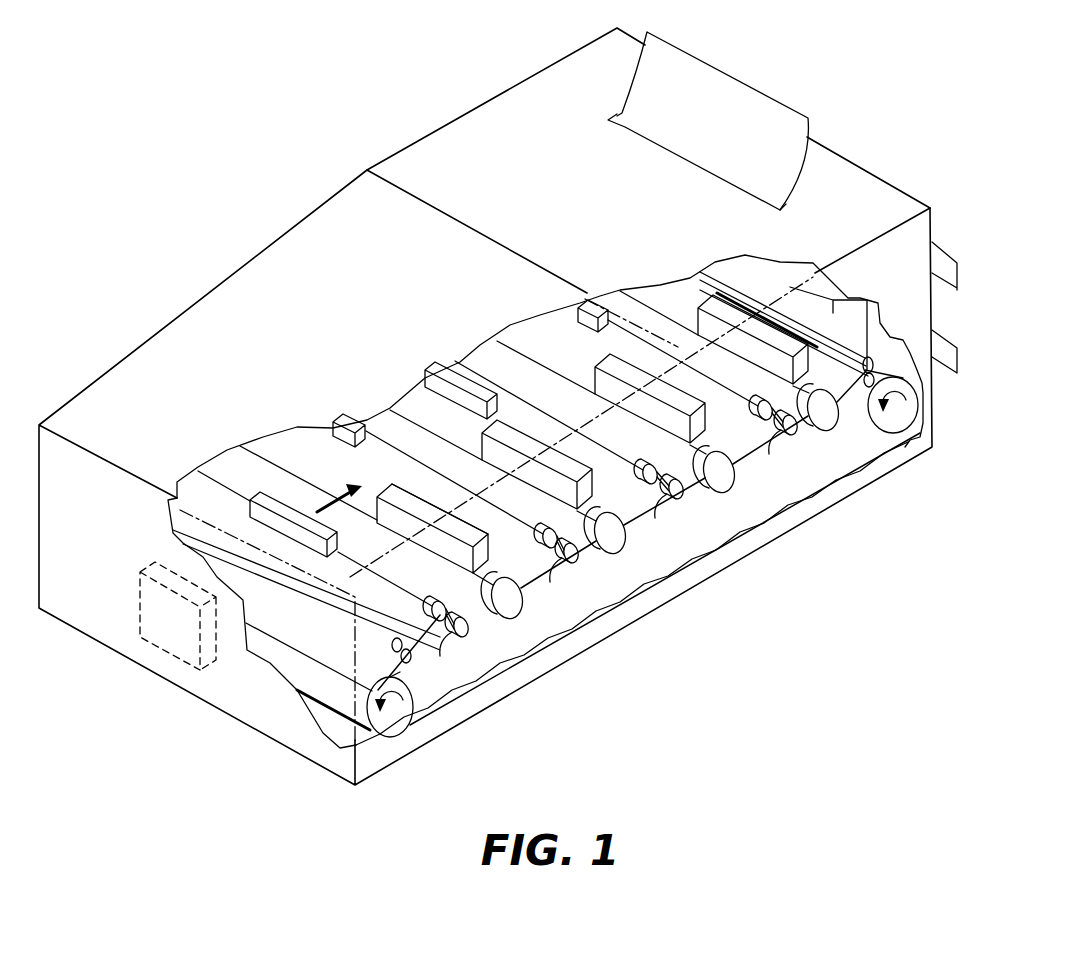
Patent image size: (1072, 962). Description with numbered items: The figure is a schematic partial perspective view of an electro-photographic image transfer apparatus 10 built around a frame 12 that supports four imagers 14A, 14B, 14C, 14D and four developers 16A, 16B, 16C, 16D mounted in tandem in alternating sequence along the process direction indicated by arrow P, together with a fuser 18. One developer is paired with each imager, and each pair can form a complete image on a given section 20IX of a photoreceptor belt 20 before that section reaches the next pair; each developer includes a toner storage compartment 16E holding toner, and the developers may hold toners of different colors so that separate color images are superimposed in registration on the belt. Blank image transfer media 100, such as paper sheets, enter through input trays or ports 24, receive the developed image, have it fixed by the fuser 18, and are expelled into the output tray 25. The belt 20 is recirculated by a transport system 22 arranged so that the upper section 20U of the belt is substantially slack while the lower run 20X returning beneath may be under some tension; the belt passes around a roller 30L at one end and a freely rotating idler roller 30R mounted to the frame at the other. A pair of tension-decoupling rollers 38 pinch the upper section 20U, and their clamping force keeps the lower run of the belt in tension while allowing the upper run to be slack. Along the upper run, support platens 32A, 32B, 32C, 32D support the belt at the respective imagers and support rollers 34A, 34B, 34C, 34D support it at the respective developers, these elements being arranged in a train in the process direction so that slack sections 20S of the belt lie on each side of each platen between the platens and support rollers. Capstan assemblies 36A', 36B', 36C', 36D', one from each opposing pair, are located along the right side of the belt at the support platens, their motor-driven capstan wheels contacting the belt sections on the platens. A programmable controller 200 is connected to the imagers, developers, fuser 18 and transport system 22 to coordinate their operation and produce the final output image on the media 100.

The image transfer apparatus 10 is at (885, 148).
The frame 12 is at (120, 372).
The image transfer media 100 is at (745, 88).
The output tray 25 is at (782, 212).
The fuser 18 is at (852, 320).
The input trays or ports 24 is at (957, 355).
The programmable controller 200 is at (172, 636).
The section of photoreceptor belt 20IX is at (360, 567).
The imager 14A is at (275, 502).
The imager 14B is at (347, 428).
The imager 14C is at (462, 388).
The imager 14D is at (590, 308).
The developer 16A is at (440, 515).
The developer 16B is at (538, 470).
The developer 16C is at (655, 390).
The developer 16D is at (748, 325).
The toner storage compartment 16E is at (403, 485).
The process direction arrow P is at (333, 496).
The left roller rotation 30L is at (395, 730).
The transport system 22 is at (910, 410).
The idler roller 30R is at (913, 395).
The photoreceptor belt 20 is at (850, 450).
The upper section of photoreceptor belt 20U is at (920, 432).
The belt lower run 20X is at (860, 430).
The slack sections 20S is at (555, 600).
The tension-decoupling rollers 38 is at (400, 652).
The support roller 34A is at (510, 605).
The support platen 32A is at (440, 625).
The capstan assembly 36A' is at (494, 695).
The support roller 34B is at (612, 540).
The support platen 32B is at (550, 542).
The capstan assembly 36B' is at (613, 604).
The support roller 34C is at (722, 478).
The support platen 32C is at (653, 480).
The capstan assembly 36C' is at (717, 541).
The support roller 34D is at (830, 420).
The support platen 32D is at (768, 415).
The capstan assembly 36D' is at (831, 477).